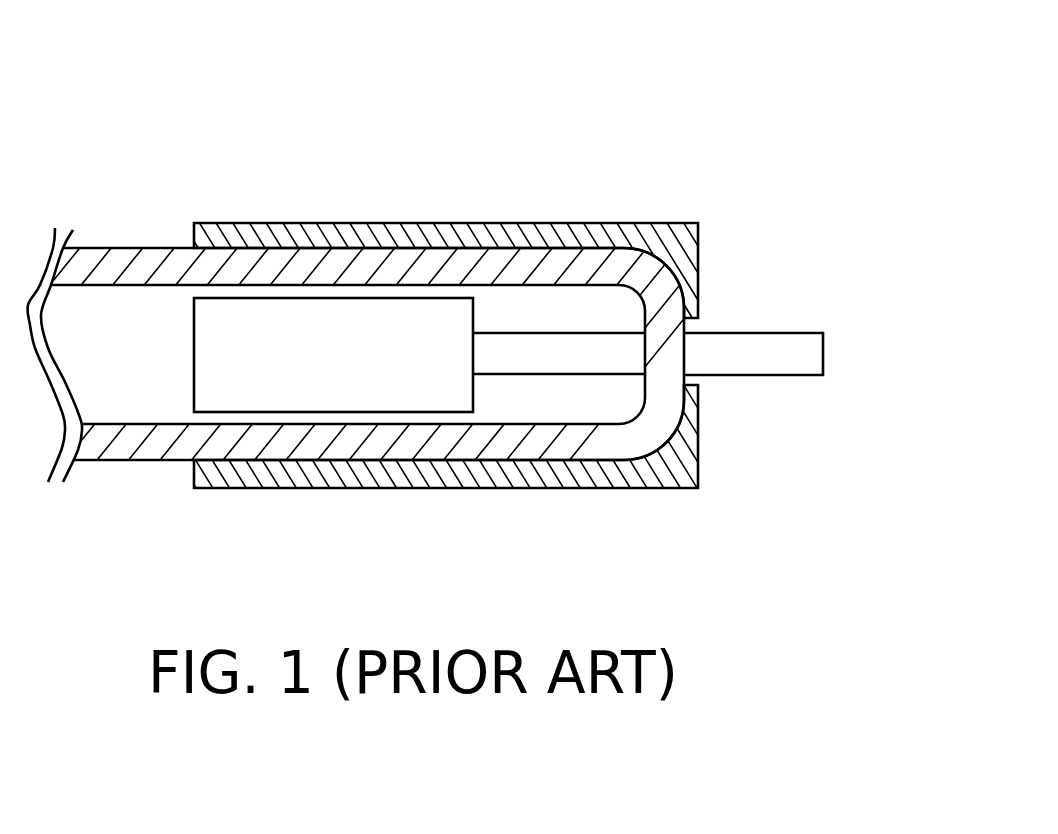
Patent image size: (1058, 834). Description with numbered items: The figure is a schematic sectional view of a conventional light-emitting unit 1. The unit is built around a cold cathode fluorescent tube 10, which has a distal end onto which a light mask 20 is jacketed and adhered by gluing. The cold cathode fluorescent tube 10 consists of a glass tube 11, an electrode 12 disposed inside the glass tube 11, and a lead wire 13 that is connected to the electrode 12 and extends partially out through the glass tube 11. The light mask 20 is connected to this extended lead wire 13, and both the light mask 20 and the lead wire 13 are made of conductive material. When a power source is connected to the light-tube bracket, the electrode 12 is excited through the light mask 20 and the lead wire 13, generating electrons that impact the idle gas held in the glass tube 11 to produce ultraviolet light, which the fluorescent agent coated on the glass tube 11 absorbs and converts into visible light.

The light-emitting unit 1 is at (78, 84).
The cold cathode fluorescent tube 10 is at (801, 25).
The glass tube 11 is at (578, 263).
The electrode 12 is at (433, 312).
The lead wire 13 is at (738, 343).
The light mask 20 is at (665, 478).